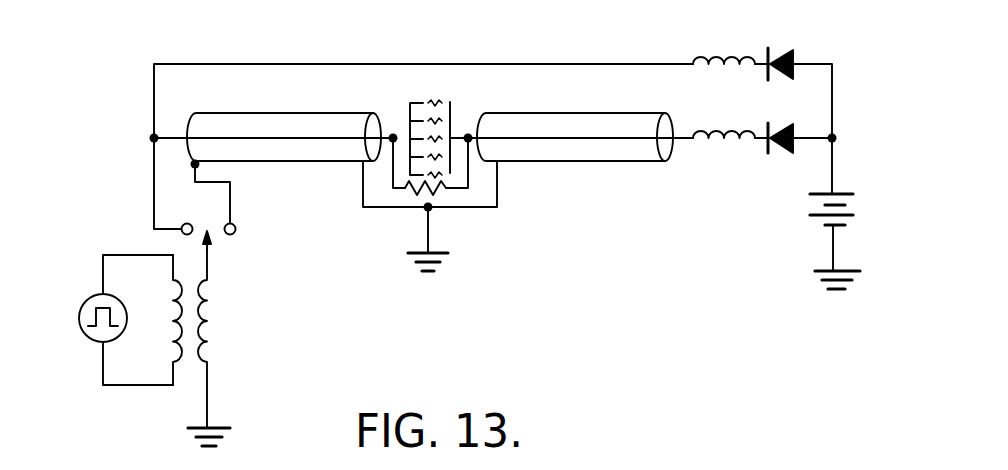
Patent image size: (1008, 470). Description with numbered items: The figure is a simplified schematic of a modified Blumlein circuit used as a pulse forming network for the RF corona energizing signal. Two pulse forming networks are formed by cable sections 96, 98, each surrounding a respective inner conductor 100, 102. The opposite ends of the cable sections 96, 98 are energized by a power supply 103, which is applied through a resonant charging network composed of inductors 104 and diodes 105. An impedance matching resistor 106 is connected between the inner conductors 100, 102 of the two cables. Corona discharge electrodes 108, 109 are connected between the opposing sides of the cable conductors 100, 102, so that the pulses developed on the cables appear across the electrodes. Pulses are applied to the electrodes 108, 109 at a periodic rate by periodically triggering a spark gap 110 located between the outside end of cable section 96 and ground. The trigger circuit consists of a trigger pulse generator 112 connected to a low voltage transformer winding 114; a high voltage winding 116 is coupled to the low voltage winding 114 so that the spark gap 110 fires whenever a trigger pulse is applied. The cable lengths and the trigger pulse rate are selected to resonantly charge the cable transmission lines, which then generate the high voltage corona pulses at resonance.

The cable section 96 is at (228, 112).
The cable section 98 is at (645, 112).
The inner conductor 100 is at (265, 140).
The inner conductor 102 is at (615, 140).
The power supply 103 is at (812, 216).
The inductor 104 is at (721, 56).
The diode 105 is at (783, 49).
The impedance matching resistor 106 is at (447, 193).
The corona discharge electrode 108 is at (410, 104).
The corona discharge electrode 109 is at (452, 112).
The spark gap 110 is at (203, 221).
The trigger pulse generator 112 is at (81, 312).
The low voltage transformer winding 114 is at (172, 340).
The high voltage winding 116 is at (210, 322).